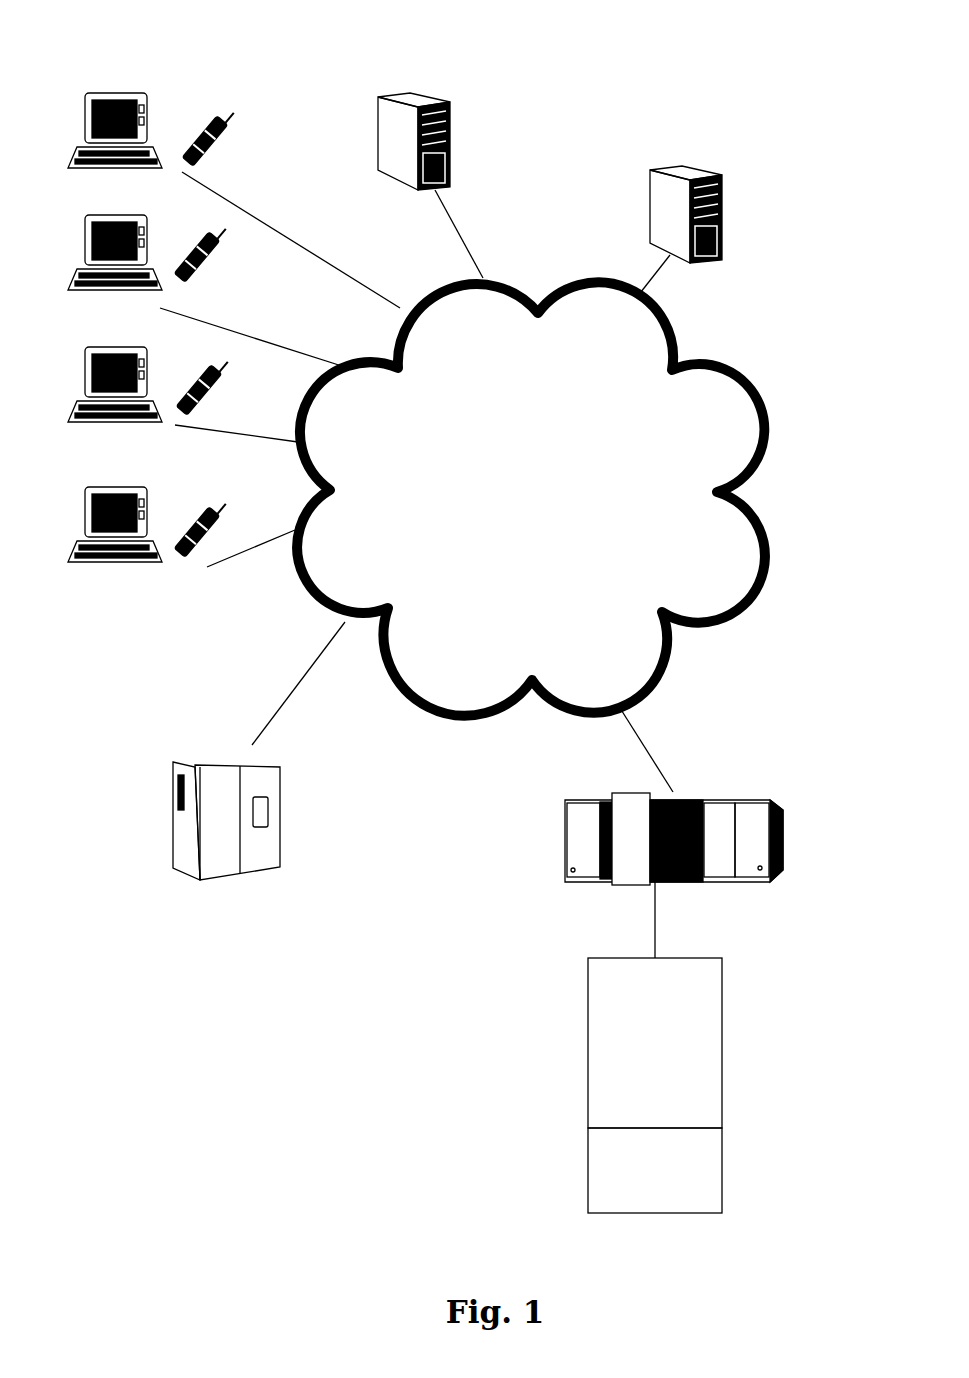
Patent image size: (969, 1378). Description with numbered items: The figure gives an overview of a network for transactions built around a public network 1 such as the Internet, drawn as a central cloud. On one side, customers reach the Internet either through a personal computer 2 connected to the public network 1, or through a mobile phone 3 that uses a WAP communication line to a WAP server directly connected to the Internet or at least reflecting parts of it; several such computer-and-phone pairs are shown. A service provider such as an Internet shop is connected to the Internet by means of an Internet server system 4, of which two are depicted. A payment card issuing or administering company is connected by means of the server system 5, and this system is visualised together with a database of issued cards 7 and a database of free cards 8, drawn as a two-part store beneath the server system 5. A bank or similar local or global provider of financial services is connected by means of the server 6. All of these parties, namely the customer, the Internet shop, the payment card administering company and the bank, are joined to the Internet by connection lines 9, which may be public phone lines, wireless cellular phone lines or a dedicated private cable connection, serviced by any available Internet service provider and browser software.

The public network 1 is at (718, 535).
The personal computer 2 is at (115, 105).
The mobile phone 3 is at (215, 112).
The Internet server system 4 is at (445, 100).
The server system 5 is at (783, 840).
The server 6 is at (220, 863).
The database of issued cards 7 is at (713, 1068).
The database of free cards 8 is at (713, 1180).
The connection lines 9 is at (290, 240).